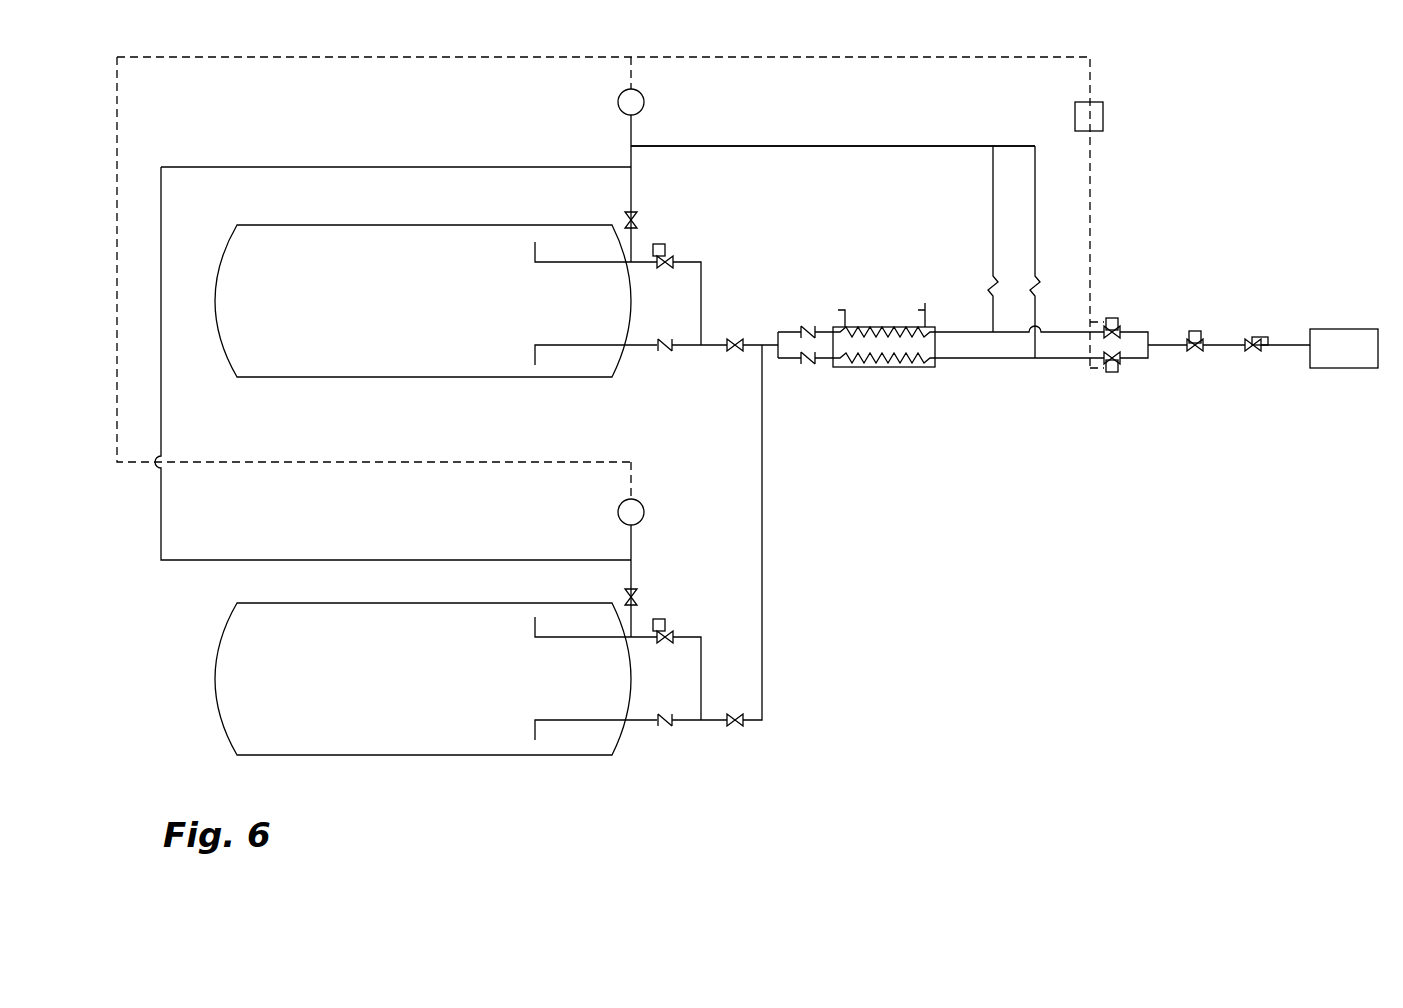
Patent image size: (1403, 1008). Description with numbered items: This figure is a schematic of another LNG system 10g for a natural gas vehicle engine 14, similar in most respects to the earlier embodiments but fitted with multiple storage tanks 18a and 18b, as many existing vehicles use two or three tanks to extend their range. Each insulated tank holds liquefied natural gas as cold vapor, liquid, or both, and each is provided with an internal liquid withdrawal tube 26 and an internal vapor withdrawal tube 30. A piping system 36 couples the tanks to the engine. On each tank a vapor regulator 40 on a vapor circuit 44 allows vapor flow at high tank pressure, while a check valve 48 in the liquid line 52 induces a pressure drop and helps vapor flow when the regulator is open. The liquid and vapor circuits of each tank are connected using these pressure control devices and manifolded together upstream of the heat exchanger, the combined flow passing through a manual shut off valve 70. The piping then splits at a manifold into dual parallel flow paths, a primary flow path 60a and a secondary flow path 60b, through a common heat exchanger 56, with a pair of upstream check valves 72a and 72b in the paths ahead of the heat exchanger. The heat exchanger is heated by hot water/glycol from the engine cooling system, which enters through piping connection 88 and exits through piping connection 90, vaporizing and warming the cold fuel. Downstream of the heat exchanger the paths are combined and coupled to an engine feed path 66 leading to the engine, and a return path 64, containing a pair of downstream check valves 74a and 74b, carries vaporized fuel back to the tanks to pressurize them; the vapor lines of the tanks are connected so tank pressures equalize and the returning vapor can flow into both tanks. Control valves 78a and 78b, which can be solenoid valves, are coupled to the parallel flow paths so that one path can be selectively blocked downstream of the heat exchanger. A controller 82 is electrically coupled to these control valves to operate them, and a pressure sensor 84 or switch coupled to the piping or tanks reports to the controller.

The system 10g is at (575, 805).
The engine 14 is at (1345, 329).
The storage tank 18a is at (392, 225).
The storage tank 18b is at (404, 757).
The internal liquid withdrawal tube 26 is at (535, 364).
The internal vapor withdrawal tube 30 is at (535, 243).
The piping system 36 is at (920, 110).
The vapor regulator 40 is at (668, 252).
The vapor circuit 44 is at (705, 280).
The check valve 48 is at (670, 357).
The liquid line 52 is at (638, 350).
The heat exchanger 56 is at (843, 368).
The primary flow path 60a is at (882, 326).
The secondary flow path 60b is at (885, 367).
The return path 64 is at (823, 145).
The engine feed path 66 is at (1166, 376).
The manual shut off valve 70 is at (731, 355).
The upstream check valve 72a is at (808, 322).
The upstream check valve 72b is at (805, 366).
The downstream check valve 74a is at (985, 287).
The downstream check valve 74b is at (1045, 287).
The control valve 78a is at (1112, 316).
The control valve 78b is at (1114, 376).
The controller 82 is at (1104, 121).
The pressure sensor 84 is at (618, 106).
The piping connection 88 is at (840, 312).
The piping connection 90 is at (925, 312).